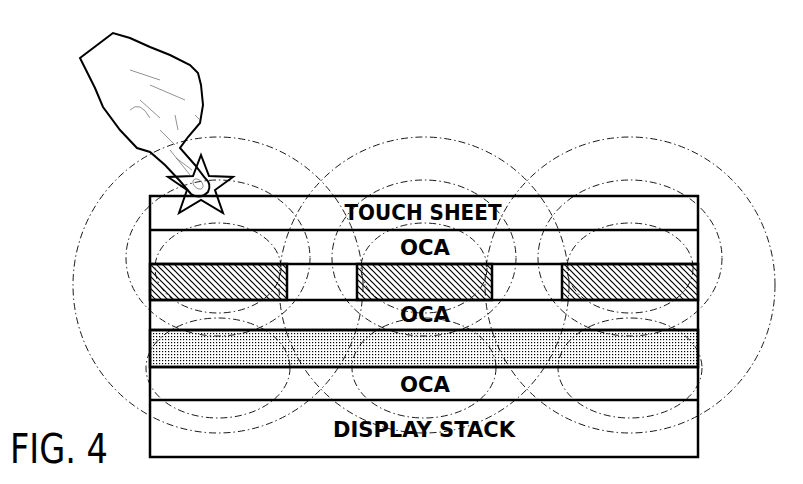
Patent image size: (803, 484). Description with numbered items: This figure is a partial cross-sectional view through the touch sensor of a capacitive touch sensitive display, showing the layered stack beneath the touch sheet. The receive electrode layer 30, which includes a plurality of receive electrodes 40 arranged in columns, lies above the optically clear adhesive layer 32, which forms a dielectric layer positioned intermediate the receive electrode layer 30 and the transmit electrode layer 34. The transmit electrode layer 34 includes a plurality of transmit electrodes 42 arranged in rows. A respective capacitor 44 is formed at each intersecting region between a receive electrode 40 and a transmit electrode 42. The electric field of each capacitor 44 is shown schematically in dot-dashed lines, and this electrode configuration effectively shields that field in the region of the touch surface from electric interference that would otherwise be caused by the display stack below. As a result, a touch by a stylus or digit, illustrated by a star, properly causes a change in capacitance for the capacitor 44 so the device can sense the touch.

The receive electrode layer 30 is at (150, 282).
The optically clear adhesive layer 32 is at (150, 314).
The transmit electrode layer 34 is at (150, 350).
The receive electrode 40 is at (172, 262).
The transmit electrode 42 is at (172, 370).
The capacitor 44 is at (150, 260).